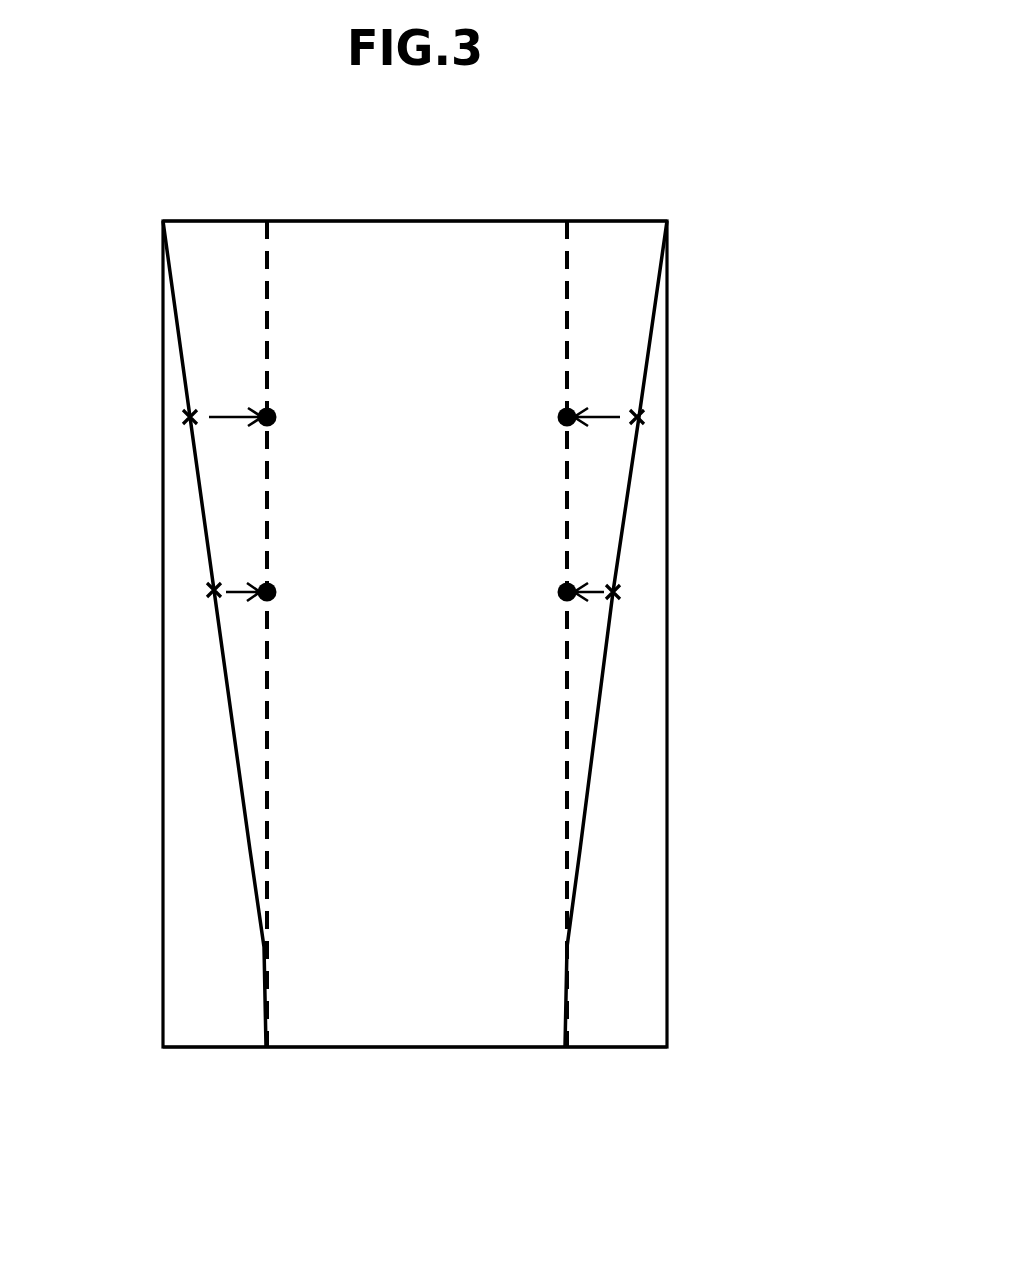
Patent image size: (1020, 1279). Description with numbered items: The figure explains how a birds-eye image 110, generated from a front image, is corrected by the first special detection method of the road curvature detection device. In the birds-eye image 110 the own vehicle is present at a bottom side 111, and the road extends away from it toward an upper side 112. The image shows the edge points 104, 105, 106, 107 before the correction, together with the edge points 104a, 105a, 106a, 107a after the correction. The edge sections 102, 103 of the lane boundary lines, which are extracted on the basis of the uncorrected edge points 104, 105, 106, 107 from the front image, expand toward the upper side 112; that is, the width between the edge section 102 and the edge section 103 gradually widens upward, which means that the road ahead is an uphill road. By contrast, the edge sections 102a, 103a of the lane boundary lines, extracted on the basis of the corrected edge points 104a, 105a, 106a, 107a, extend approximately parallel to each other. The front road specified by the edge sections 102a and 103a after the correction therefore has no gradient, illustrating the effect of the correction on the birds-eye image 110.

The birds-eye image 110 is at (672, 155).
The bottom side 111 is at (390, 1048).
The upper side 112 is at (414, 220).
The edge section 102 is at (203, 504).
The edge section 103 is at (628, 507).
The edge section after correction 102a is at (268, 484).
The edge section after correction 103a is at (566, 486).
The edge point 104 is at (188, 415).
The edge point 105 is at (210, 591).
The edge point 106 is at (642, 415).
The edge point 107 is at (618, 591).
The edge point after correction 104a is at (276, 420).
The edge point after correction 105a is at (276, 596).
The edge point after correction 106a is at (558, 420).
The edge point after correction 107a is at (558, 596).